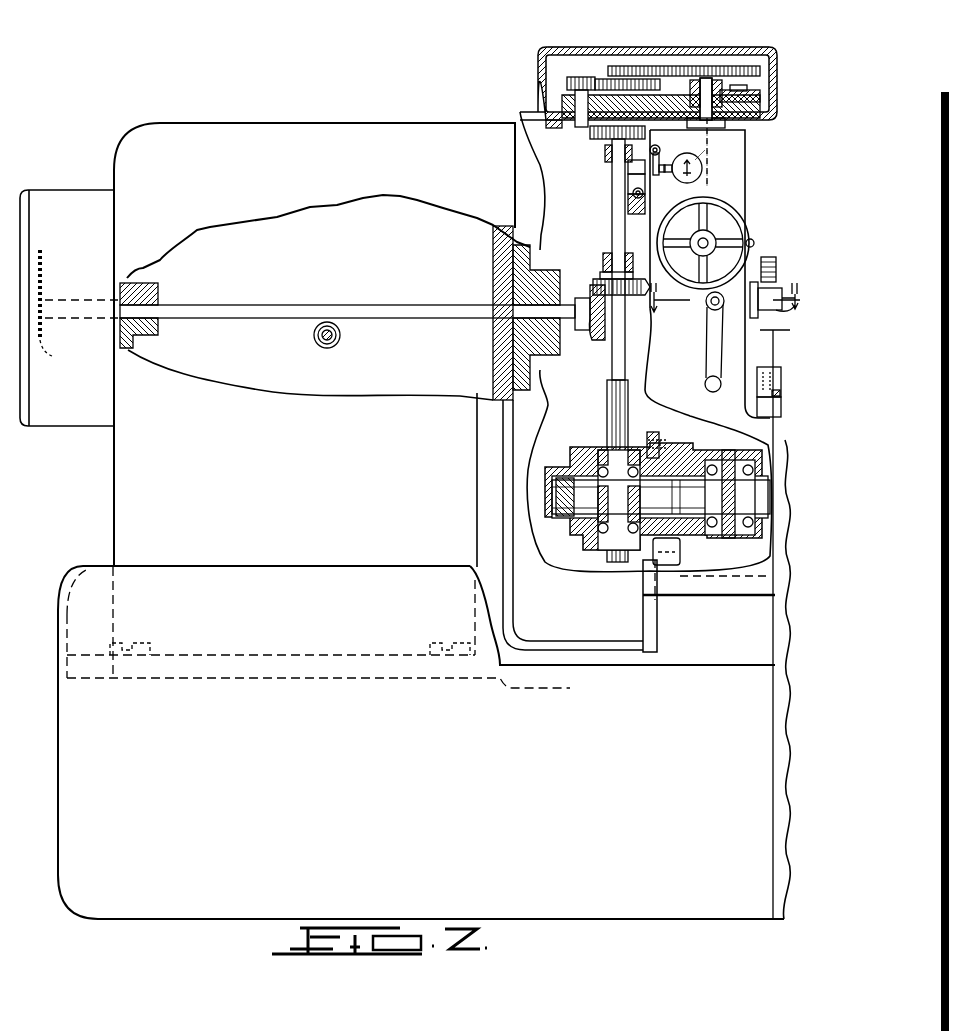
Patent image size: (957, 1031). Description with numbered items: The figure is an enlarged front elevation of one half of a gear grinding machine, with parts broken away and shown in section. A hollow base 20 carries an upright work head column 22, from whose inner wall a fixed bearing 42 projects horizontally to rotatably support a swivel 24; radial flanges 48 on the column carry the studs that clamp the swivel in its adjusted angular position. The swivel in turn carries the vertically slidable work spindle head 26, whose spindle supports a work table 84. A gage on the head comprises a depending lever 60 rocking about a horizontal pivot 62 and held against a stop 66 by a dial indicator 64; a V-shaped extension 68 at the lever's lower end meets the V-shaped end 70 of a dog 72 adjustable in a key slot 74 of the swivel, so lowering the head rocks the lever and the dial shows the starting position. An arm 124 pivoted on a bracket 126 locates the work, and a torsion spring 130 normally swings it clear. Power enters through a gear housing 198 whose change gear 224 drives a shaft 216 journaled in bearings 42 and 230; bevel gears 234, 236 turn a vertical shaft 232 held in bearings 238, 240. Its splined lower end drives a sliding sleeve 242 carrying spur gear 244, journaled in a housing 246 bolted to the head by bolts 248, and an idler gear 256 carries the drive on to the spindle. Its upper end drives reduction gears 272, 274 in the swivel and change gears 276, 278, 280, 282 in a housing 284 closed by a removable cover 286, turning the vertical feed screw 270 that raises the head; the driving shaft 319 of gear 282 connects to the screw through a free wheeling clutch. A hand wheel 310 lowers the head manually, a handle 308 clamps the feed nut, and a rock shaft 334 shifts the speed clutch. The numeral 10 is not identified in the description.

The base 20 is at (256, 778).
The work head column 22 is at (119, 135).
The swivel 24 is at (530, 152).
The work spindle head 26 is at (740, 162).
The fixed bearing 42 is at (492, 282).
The radial flanges 48 is at (475, 432).
The depending lever 60 is at (650, 162).
The horizontal pivot 62 is at (655, 144).
The dial indicator 64 is at (702, 160).
The stop 66 is at (650, 166).
The lateral V-shaped extension 68 is at (627, 172).
The V-shaped end 70 is at (646, 194).
The dog 72 is at (627, 188).
The key slot 74 is at (627, 210).
The work table 84 is at (776, 367).
The section line 10 is at (727, 600).
The arm 124 is at (782, 290).
The bracket 126 is at (789, 309).
The torsion spring 130 is at (778, 255).
The gear housing 198 is at (66, 198).
The driven shaft 216 is at (205, 300).
The change gear 224 is at (64, 312).
The bearing 230 is at (162, 282).
The vertical shaft 232 is at (607, 372).
The bevel gear 234 is at (590, 292).
The bevel gear 236 is at (600, 279).
The bearing 238 is at (604, 160).
The bearing 240 is at (602, 256).
The vertically slidable sleeve 242 is at (576, 468).
The spur gear 244 is at (596, 484).
The supporting housing 246 is at (588, 490).
The bolts 248 is at (656, 432).
The idler gear 256 is at (705, 450).
The vertical feed screw 270 is at (720, 186).
The reduction gear 272 is at (608, 142).
The reduction gear 274 is at (518, 118).
The change gear 276 is at (567, 78).
The change gear 278 is at (598, 79).
The change gear 280 is at (648, 66).
The change gear 282 is at (740, 66).
The housing 284 is at (531, 63).
The removable cover 286 is at (685, 47).
The handle 308 is at (706, 358).
The hand wheel 310 is at (745, 220).
The driving shaft 319 is at (758, 82).
The rock shaft 334 is at (338, 345).